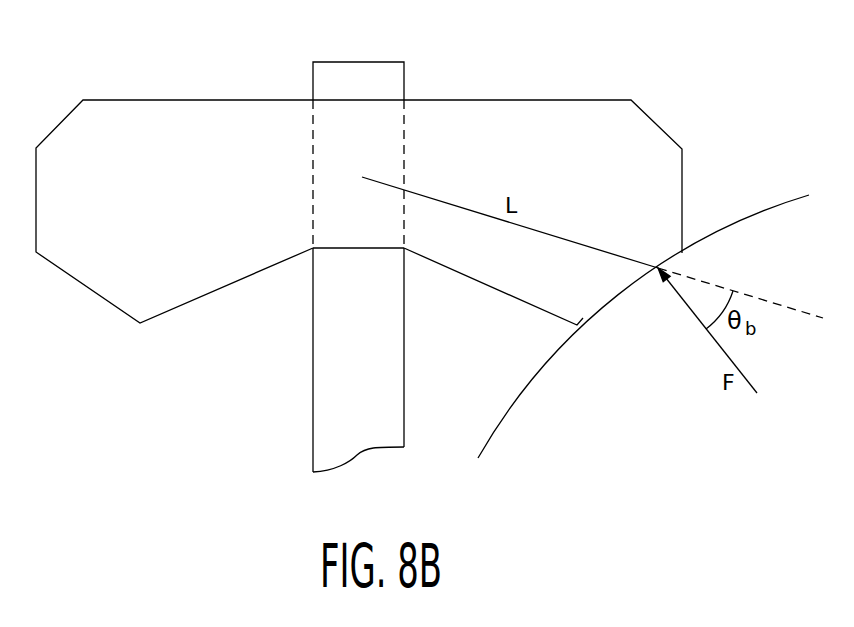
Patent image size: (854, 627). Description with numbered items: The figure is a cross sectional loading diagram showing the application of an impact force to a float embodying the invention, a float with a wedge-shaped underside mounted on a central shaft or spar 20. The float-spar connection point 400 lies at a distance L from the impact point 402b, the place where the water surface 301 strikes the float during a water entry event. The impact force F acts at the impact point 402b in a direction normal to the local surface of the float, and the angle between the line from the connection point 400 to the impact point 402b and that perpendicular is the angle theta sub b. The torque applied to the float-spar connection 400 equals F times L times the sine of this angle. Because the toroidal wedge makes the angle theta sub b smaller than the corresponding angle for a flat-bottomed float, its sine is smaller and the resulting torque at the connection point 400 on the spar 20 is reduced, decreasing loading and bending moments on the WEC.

The spar 20 is at (360, 70).
The float-spar connection point 400 is at (362, 177).
The water surface 301 is at (757, 215).
The impact point 402b is at (658, 265).